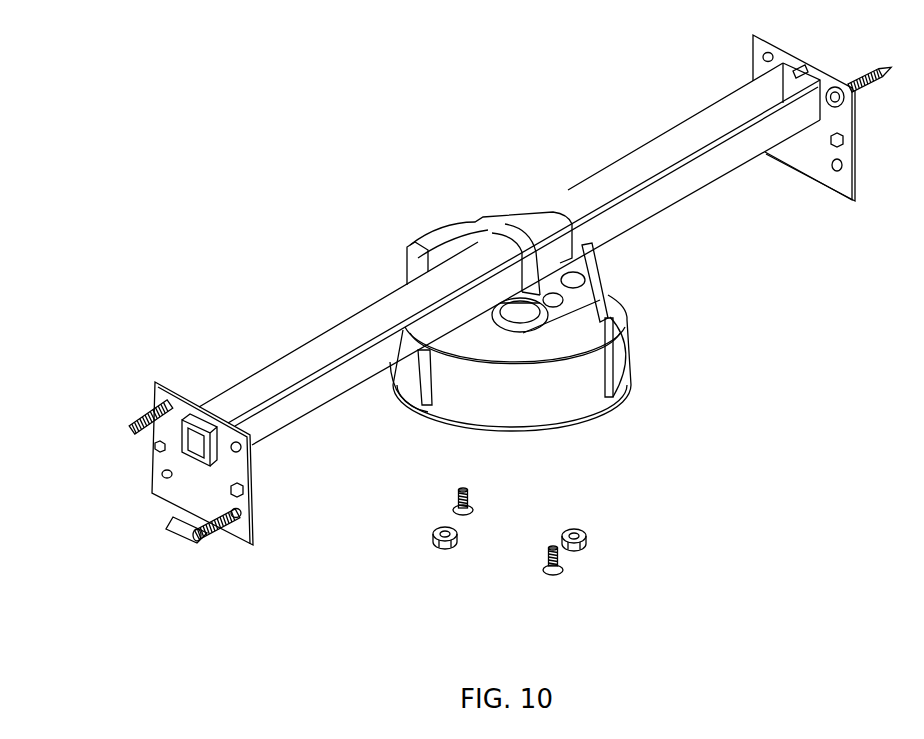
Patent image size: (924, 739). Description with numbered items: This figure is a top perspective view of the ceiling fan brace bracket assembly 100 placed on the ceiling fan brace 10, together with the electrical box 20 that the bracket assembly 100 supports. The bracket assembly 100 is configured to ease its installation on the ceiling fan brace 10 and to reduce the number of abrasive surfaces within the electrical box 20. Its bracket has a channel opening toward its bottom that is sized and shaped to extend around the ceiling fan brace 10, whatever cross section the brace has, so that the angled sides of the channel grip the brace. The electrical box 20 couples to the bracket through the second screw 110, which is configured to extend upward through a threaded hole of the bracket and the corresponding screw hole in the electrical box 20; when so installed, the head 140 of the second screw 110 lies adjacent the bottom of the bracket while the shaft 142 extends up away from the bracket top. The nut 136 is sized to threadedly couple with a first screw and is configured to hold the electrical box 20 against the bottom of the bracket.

The ceiling fan brace 10 is at (377, 313).
The electrical box 20 is at (573, 374).
The ceiling fan brace bracket assembly 100 is at (527, 222).
The second screw 110 is at (563, 567).
The nut 136 is at (453, 528).
The head of the second screw 140 is at (453, 510).
The shaft of the second screw 142 is at (455, 503).